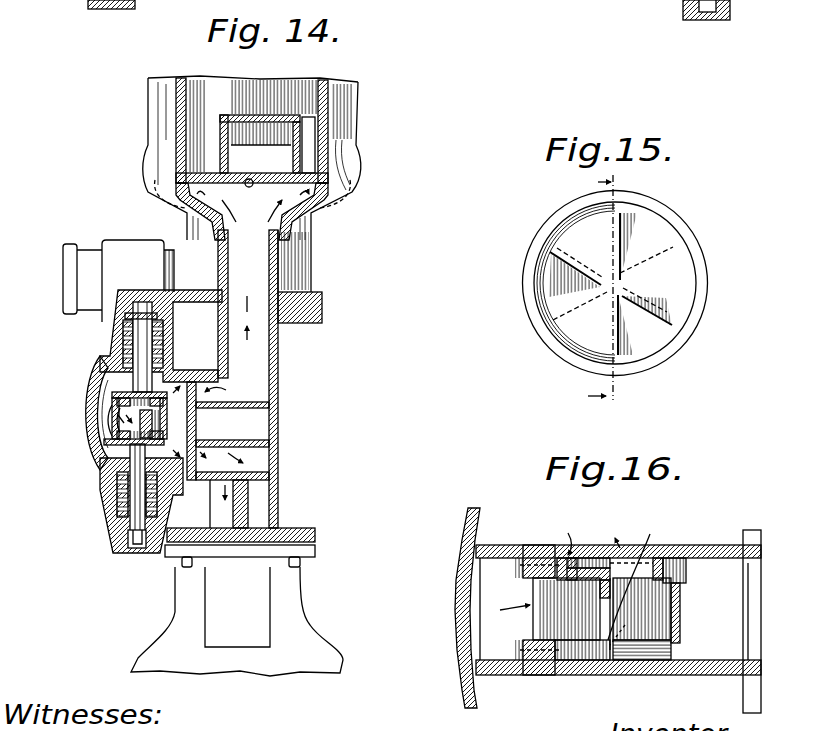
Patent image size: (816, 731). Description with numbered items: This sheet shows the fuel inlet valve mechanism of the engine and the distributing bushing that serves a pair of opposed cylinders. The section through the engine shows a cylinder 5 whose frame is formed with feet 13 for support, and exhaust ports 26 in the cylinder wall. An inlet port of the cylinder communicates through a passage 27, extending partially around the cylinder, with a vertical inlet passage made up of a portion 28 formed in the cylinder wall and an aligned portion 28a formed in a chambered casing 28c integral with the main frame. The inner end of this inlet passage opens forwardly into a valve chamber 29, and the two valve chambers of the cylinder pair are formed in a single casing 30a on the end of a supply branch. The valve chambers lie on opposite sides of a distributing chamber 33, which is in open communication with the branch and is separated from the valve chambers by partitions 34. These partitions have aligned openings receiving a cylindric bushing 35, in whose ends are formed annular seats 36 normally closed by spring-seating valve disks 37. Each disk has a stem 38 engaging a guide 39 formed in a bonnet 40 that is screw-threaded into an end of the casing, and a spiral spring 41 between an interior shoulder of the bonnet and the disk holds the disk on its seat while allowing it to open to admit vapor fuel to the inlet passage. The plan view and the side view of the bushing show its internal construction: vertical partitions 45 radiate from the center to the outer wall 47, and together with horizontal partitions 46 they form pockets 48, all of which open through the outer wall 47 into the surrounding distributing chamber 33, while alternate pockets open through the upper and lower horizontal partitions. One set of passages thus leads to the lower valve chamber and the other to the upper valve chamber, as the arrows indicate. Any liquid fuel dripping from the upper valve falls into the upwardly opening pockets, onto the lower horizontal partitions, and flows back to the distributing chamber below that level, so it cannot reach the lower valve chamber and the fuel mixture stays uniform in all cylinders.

In FIG. 14, the cylinder 5 is at (147, 104).
In FIG. 15, the feet 13 is at (611, 294).
In FIG. 14, the exhaust port 26 is at (252, 132).
In FIG. 14, the passage 27 is at (186, 187).
In FIG. 14, the inlet passage portion 28 is at (270, 379).
In FIG. 14, the inlet passage portion 28a is at (228, 433).
In FIG. 14, the casing 28c is at (278, 426).
In FIG. 14, the valve chamber 29 is at (100, 382).
In FIG. 14, the casing 30a is at (98, 412).
In FIG. 16, the casing 30a is at (460, 603).
In FIG. 14, the distributing chamber 33 is at (100, 420).
In FIG. 16, the distributing chamber 33 is at (503, 610).
In FIG. 14, the partition 34 is at (197, 426).
In FIG. 16, the partition 34 is at (715, 548).
In FIG. 14, the bushing 35 is at (108, 441).
In FIG. 15, the bushing 35 is at (708, 290).
In FIG. 16, the bushing 35 is at (688, 590).
In FIG. 14, the annular seat 36 is at (104, 400).
In FIG. 15, the annular seat 36 is at (535, 278).
In FIG. 16, the annular seat 36 is at (590, 545).
In FIG. 14, the valve disk 37 is at (116, 390).
In FIG. 14, the stem 38 is at (136, 327).
In FIG. 14, the guide 39 is at (118, 341).
In FIG. 14, the bonnet 40 is at (174, 334).
In FIG. 14, the spring 41 is at (176, 350).
In FIG. 14, the vertical partition 45 is at (210, 422).
In FIG. 16, the vertical partition 45 is at (533, 598).
In FIG. 14, the horizontal partition 46 is at (100, 436).
In FIG. 15, the horizontal partition 46 is at (611, 284).
In FIG. 16, the horizontal partition 46 is at (612, 686).
In FIG. 16, the outer wall 47 is at (523, 576).
In FIG. 16, the pocket 48 is at (625, 625).